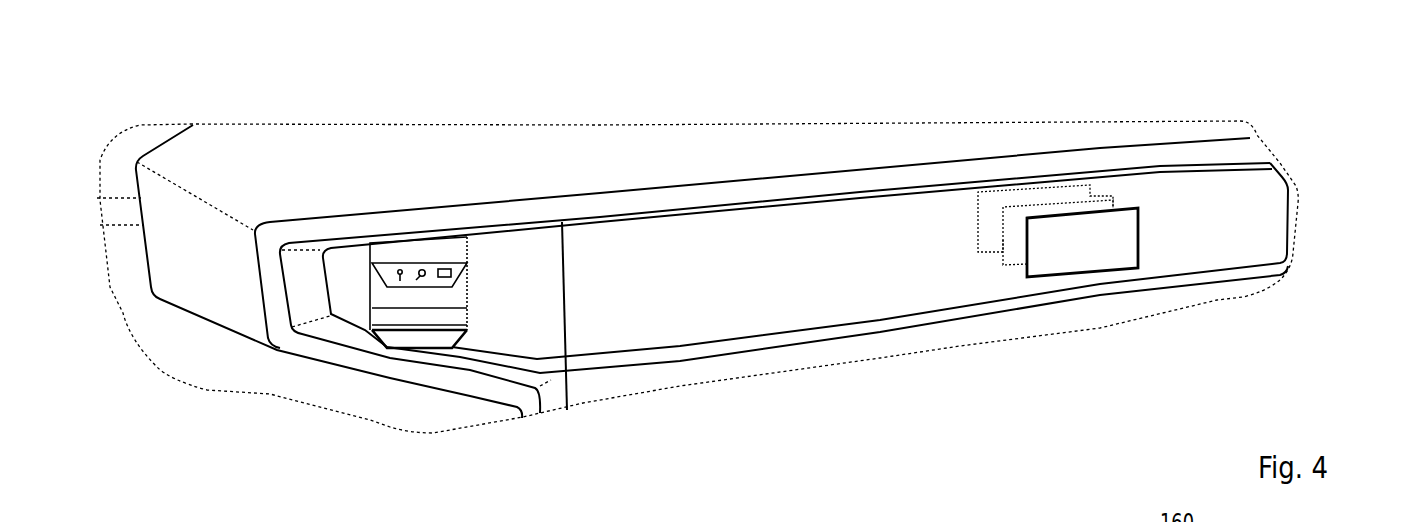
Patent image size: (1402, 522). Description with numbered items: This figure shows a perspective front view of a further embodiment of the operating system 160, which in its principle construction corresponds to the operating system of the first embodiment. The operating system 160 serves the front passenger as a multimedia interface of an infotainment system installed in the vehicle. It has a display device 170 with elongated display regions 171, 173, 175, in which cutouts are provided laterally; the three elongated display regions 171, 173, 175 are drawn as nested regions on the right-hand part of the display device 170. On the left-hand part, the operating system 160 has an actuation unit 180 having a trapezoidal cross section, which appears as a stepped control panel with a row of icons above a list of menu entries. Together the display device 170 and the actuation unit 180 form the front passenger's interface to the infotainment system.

The operating system 160 is at (1305, 148).
The display device 170 is at (1083, 316).
The elongated display region 171 is at (1072, 277).
The elongated display region 173 is at (1017, 265).
The elongated display region 175 is at (988, 254).
The actuation unit 180 is at (417, 337).